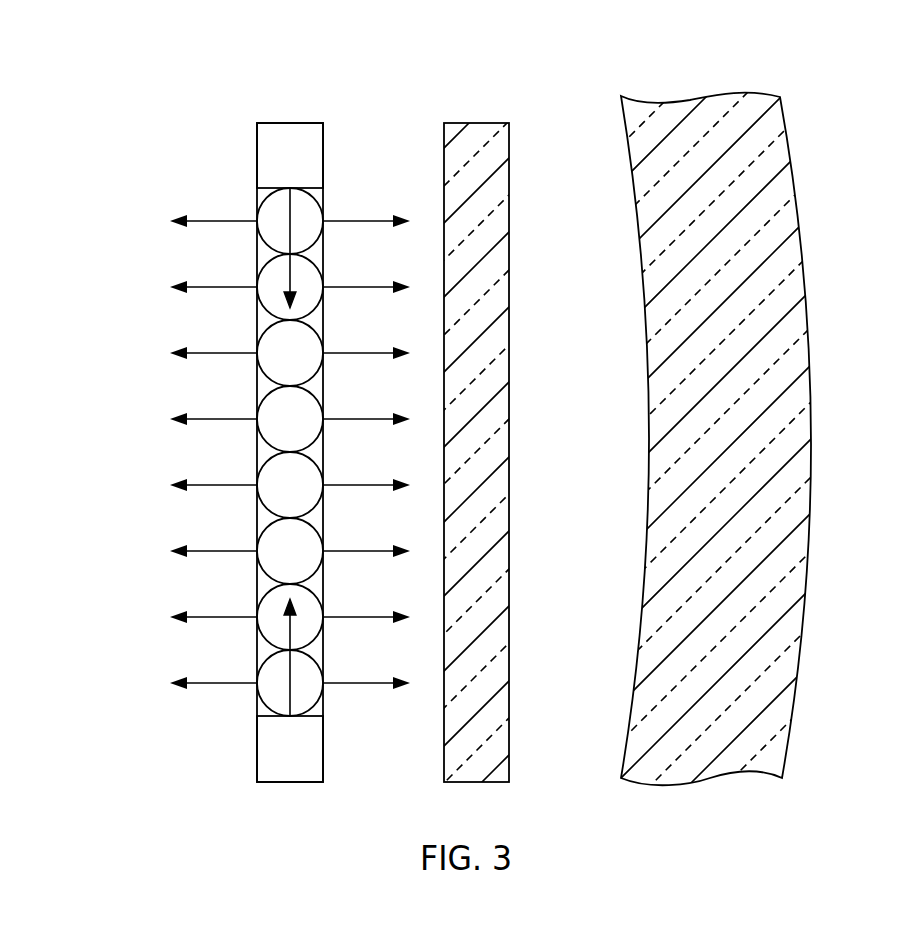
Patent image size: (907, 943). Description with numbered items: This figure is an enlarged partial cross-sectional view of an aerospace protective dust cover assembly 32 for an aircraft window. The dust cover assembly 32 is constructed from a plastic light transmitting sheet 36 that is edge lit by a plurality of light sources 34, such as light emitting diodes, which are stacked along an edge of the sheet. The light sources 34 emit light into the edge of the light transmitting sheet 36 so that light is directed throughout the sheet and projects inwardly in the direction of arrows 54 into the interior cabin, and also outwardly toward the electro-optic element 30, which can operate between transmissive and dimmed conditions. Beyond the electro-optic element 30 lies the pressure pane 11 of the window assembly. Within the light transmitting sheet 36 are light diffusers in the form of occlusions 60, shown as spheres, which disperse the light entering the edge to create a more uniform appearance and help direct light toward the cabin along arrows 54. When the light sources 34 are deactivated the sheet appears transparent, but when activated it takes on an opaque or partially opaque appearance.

The pressure pane 11 is at (841, 132).
The electro-optic element 30 is at (499, 86).
The dust cover assembly 32 is at (268, 64).
The light sources 34 is at (314, 141).
The light transmitting sheet 36 is at (258, 196).
The arrows 54 is at (357, 220).
The occlusions 60 is at (312, 230).